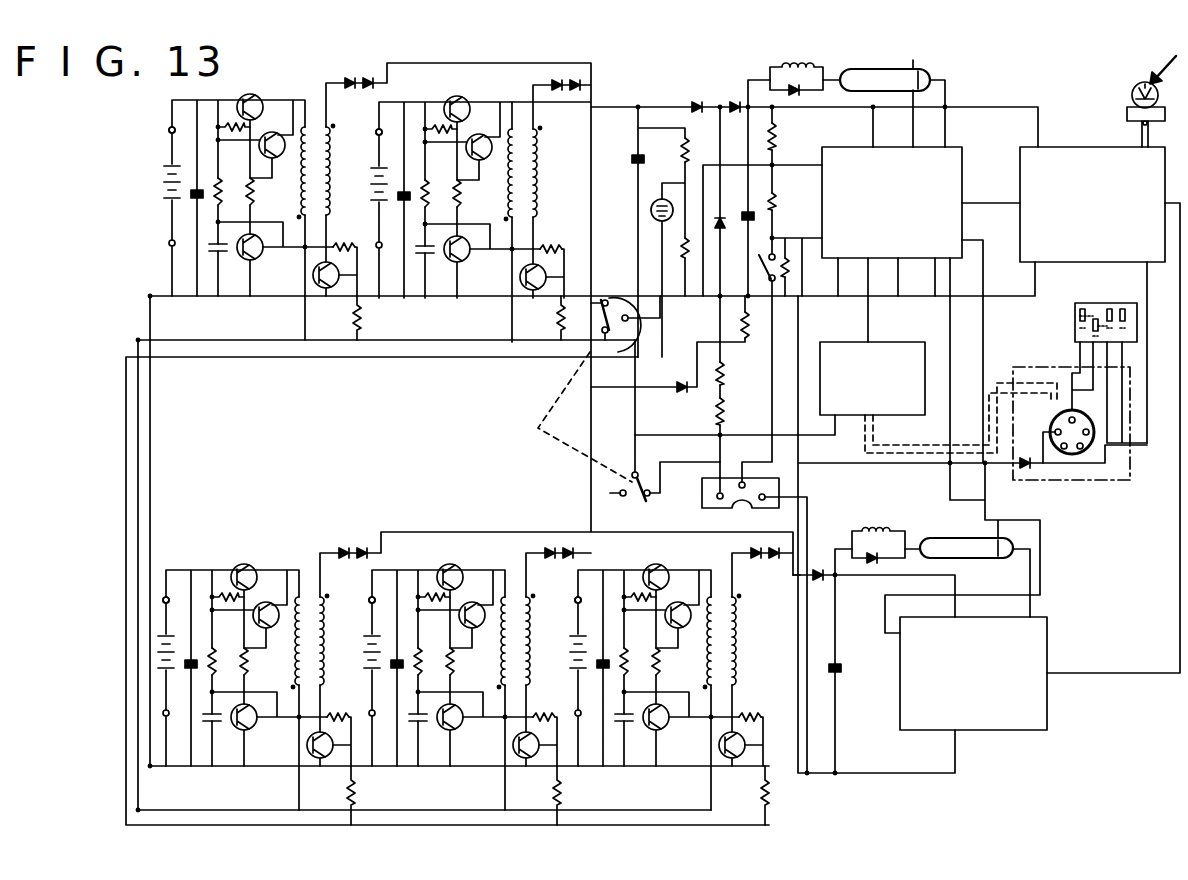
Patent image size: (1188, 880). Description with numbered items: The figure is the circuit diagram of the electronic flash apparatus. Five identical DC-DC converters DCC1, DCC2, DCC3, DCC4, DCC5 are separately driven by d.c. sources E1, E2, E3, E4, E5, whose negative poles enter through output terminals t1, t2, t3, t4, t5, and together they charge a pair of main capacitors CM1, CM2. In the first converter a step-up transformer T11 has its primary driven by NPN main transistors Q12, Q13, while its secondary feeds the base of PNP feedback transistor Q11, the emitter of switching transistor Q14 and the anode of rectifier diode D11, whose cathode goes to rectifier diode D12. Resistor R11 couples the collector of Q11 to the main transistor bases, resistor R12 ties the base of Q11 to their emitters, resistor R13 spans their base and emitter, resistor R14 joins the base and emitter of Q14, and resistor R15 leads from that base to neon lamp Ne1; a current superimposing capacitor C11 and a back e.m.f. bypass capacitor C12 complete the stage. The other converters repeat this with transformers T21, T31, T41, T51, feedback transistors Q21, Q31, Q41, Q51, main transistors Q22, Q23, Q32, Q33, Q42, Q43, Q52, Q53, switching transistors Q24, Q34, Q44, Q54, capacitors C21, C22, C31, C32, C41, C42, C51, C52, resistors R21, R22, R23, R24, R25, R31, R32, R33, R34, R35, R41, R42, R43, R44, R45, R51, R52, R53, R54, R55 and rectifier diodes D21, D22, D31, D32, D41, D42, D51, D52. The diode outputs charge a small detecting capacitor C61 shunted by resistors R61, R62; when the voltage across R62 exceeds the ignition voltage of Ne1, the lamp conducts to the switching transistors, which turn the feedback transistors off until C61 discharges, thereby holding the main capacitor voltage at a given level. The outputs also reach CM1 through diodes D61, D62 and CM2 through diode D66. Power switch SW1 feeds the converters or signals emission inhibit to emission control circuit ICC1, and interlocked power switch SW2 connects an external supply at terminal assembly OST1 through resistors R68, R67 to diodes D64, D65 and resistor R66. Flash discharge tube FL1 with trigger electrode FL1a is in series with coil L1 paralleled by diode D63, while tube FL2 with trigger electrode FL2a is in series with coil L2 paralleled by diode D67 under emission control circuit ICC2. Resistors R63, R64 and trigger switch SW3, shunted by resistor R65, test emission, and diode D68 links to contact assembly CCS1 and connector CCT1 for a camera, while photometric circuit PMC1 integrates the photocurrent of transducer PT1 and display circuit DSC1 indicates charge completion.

The first DC-DC converter DCC1 is at (247, 50).
The second DC-DC converter DCC2 is at (482, 187).
The third DC-DC converter DCC3 is at (247, 659).
The fourth DC-DC converter DCC4 is at (453, 647).
The fifth DC-DC converter DCC5 is at (668, 660).
The first output terminal t1 is at (161, 136).
The second output terminal t2 is at (368, 138).
The third output terminal t3 is at (155, 606).
The fourth output terminal t4 is at (361, 606).
The fifth output terminal t5 is at (567, 606).
The first d.c. source E1 is at (164, 198).
The second d.c. source E2 is at (363, 191).
The third d.c. source E3 is at (150, 659).
The fourth d.c. source E4 is at (356, 659).
The fifth d.c. source E5 is at (562, 659).
The resistor R11 is at (254, 192).
The resistor R12 is at (228, 183).
The resistor R13 is at (236, 122).
The resistor R14 is at (347, 242).
The resistor R15 is at (352, 318).
The resistor R21 is at (472, 196).
The resistor R22 is at (454, 192).
The resistor R23 is at (433, 108).
The resistor R24 is at (553, 237).
The resistor R25 is at (556, 320).
The resistor R31 is at (258, 662).
The resistor R32 is at (222, 653).
The resistor R33 is at (220, 576).
The resistor R34 is at (340, 705).
The resistor R35 is at (346, 792).
The resistor R41 is at (464, 662).
The resistor R42 is at (428, 653).
The resistor R43 is at (426, 576).
The resistor R44 is at (546, 705).
The resistor R45 is at (552, 792).
The resistor R51 is at (670, 662).
The resistor R52 is at (634, 653).
The resistor R53 is at (632, 576).
The resistor R54 is at (752, 705).
The resistor R55 is at (760, 792).
The current superimposing capacitor C11 is at (203, 200).
The capacitor C12 is at (221, 256).
The current superimposing capacitor C21 is at (424, 208).
The capacitor C22 is at (433, 265).
The current superimposing capacitor C31 is at (211, 676).
The capacitor C32 is at (220, 733).
The current superimposing capacitor C41 is at (417, 676).
The capacitor C42 is at (426, 733).
The current superimposing capacitor C51 is at (623, 676).
The capacitor C52 is at (632, 733).
The feedback transistor Q11 is at (263, 254).
The main transistor Q12 is at (256, 97).
The main transistor Q13 is at (272, 137).
The switching transistor Q14 is at (313, 280).
The feedback transistor Q21 is at (470, 256).
The main transistor Q22 is at (463, 99).
The main transistor Q23 is at (479, 139).
The switching transistor Q24 is at (512, 281).
The feedback transistor Q31 is at (257, 724).
The main transistor Q32 is at (250, 567).
The main transistor Q33 is at (266, 607).
The switching transistor Q34 is at (299, 749).
The feedback transistor Q41 is at (463, 724).
The main transistor Q42 is at (456, 567).
The main transistor Q43 is at (472, 607).
The switching transistor Q44 is at (505, 749).
The feedback transistor Q51 is at (669, 724).
The main transistor Q52 is at (662, 567).
The main transistor Q53 is at (678, 607).
The switching transistor Q54 is at (711, 749).
The step-up transformer T11 is at (308, 118).
The step-up transformer T21 is at (522, 149).
The step-up transformer T31 is at (309, 617).
The step-up transformer T41 is at (515, 617).
The step-up transformer T51 is at (721, 617).
The rectifier diode D11 is at (356, 99).
The rectifier diode D12 is at (369, 78).
The rectifier diode D21 is at (558, 101).
The rectifier diode D22 is at (597, 78).
The rectifier diode D31 is at (350, 569).
The rectifier diode D32 is at (357, 538).
The rectifier diode D41 is at (556, 569).
The rectifier diode D42 is at (563, 538).
The rectifier diode D51 is at (774, 567).
The rectifier diode D52 is at (780, 534).
The diode D61 is at (696, 102).
The diode D62 is at (733, 102).
The diode D63 is at (798, 94).
The diode D64 is at (726, 230).
The diode D65 is at (683, 382).
The diode D66 is at (818, 568).
The diode D67 is at (870, 565).
The diode D68 is at (1026, 470).
The resistor R61 is at (688, 150).
The resistor R62 is at (680, 246).
The resistor R63 is at (777, 136).
The resistor R64 is at (776, 196).
The resistor R65 is at (790, 271).
The resistor R66 is at (740, 325).
The resistor R67 is at (724, 372).
The resistor R68 is at (724, 410).
The capacitor C61 is at (634, 162).
The neon lamp Ne1 is at (651, 211).
The main capacitor CM1 is at (756, 218).
The main capacitor CM2 is at (841, 669).
The power switch SW1 is at (606, 291).
The power switch SW2 is at (640, 472).
The trigger switch SW3 is at (780, 288).
The coil L1 is at (793, 67).
The coil L2 is at (876, 532).
The flash discharge tube FL1 is at (880, 70).
The trigger electrode FL1a is at (913, 68).
The flash discharge tube FL2 is at (945, 538).
The trigger electrode FL2a is at (1010, 559).
The terminal assembly OST1 is at (737, 504).
The emission control circuit ICC1 is at (965, 155).
The emission control circuit ICC2 is at (1048, 706).
The photometric circuit PMC1 is at (1080, 147).
The photoelectric transducer element PT1 is at (1135, 88).
The display circuit DSC1 is at (868, 342).
The contact assembly CCS1 is at (1103, 302).
The connector CCT1 is at (1105, 490).